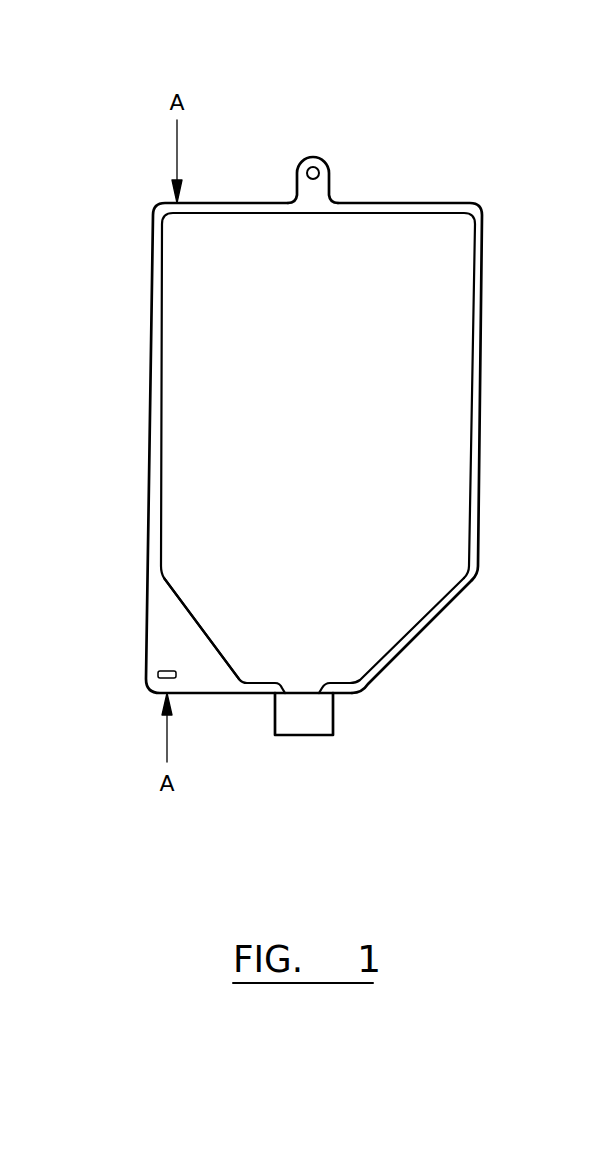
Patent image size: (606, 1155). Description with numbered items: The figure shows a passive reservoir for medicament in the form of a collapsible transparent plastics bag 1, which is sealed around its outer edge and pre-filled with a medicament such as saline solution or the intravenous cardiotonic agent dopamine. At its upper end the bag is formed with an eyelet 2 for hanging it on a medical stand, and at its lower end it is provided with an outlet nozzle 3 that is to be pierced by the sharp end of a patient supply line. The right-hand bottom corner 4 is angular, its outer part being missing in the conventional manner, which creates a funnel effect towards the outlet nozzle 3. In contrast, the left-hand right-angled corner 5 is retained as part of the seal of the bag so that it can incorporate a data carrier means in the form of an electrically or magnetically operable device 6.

The collapsible transparent plastics bag 1 is at (455, 245).
The eyelet 2 is at (326, 164).
The outlet nozzle 3 is at (320, 722).
The right-hand bottom corner 4 is at (398, 662).
The left-hand right-angled corner 5 is at (165, 623).
The electrically or magnetically operable device 6 is at (157, 675).